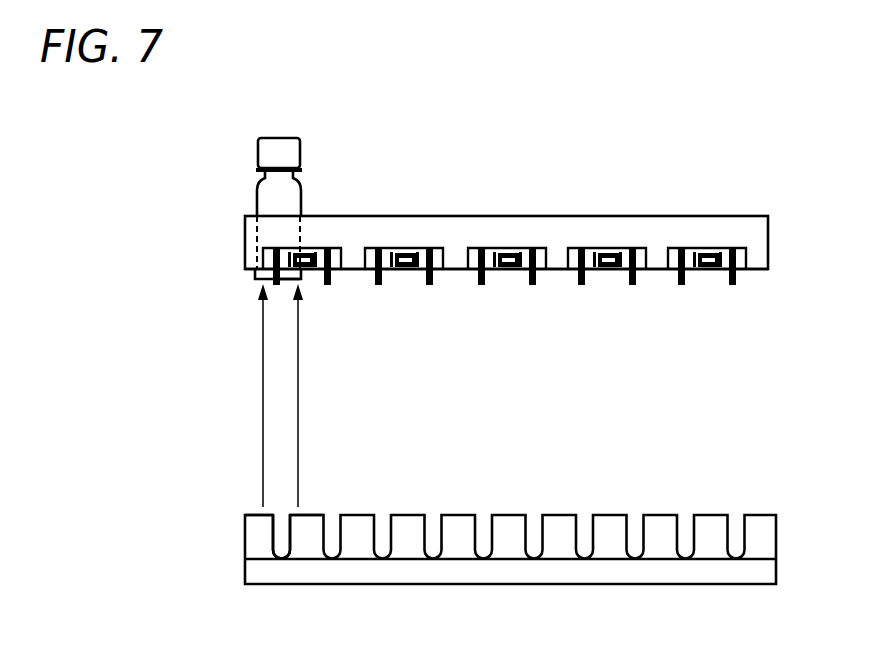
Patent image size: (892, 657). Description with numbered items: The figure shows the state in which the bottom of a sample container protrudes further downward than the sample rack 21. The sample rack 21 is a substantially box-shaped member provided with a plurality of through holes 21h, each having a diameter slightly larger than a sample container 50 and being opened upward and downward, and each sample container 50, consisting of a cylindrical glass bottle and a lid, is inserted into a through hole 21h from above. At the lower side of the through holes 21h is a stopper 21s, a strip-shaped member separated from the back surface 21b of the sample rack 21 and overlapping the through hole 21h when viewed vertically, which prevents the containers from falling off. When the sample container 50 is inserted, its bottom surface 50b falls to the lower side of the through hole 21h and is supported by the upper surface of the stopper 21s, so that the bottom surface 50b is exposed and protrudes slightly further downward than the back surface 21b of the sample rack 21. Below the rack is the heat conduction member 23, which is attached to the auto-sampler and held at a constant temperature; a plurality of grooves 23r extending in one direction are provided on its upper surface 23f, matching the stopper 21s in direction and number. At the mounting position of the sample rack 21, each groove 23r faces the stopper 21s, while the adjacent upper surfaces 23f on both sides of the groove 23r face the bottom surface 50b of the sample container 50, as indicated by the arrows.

The sample rack 21 is at (743, 217).
The through hole 21h is at (302, 210).
The back surface 21b is at (250, 272).
The stopper 21s is at (281, 280).
The sample container 50 is at (300, 148).
The bottom surface 50b is at (262, 280).
The heat conduction member 23 is at (767, 517).
The upper surface 23f is at (253, 513).
The groove 23r is at (282, 537).